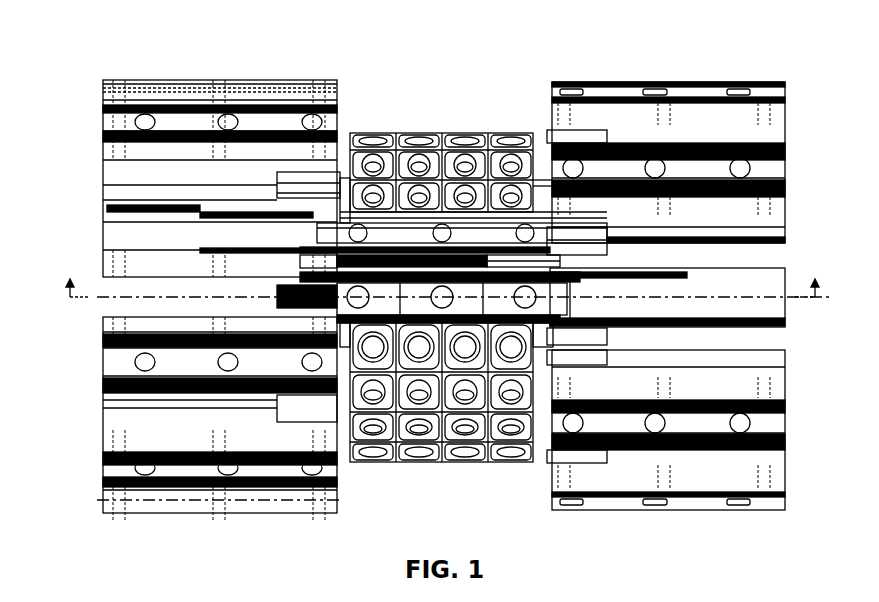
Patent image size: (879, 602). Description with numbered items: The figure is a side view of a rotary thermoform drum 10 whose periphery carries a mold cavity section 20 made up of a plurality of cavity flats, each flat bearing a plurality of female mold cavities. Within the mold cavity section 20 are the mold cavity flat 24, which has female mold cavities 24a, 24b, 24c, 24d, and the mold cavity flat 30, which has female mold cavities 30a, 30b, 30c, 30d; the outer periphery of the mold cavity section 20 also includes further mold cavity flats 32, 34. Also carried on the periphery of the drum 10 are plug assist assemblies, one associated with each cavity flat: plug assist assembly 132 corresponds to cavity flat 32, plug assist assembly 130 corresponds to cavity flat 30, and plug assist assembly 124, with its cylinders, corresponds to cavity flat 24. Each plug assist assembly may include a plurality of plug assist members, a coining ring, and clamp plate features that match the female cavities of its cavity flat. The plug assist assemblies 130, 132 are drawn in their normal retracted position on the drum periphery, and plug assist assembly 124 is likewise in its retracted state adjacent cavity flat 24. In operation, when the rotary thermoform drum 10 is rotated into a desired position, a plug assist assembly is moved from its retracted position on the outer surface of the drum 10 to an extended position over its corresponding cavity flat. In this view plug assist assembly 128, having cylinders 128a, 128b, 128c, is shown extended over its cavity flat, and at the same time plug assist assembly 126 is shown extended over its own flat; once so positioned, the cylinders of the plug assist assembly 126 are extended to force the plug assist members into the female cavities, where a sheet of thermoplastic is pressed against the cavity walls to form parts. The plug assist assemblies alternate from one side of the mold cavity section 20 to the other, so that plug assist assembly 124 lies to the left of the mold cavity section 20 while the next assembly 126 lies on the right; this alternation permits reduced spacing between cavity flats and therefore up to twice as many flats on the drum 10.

The rotary thermoform drum 10 is at (760, 45).
The mold cavity section 20 is at (506, 71).
The mold cavity flat 24 is at (535, 353).
The female mold cavity 24a is at (377, 360).
The female mold cavity 24b is at (420, 360).
The female mold cavity 24c is at (465, 360).
The female mold cavity 24d is at (508, 360).
The mold cavity flat 30 is at (560, 192).
The female mold cavity 30a is at (377, 200).
The female mold cavity 30b is at (418, 200).
The female mold cavity 30c is at (465, 203).
The female mold cavity 30d is at (507, 203).
The mold cavity flat 32 is at (578, 148).
The mold cavity flat 34 is at (550, 133).
The plug assist assembly 124 is at (107, 359).
The plug assist assembly 126 is at (560, 289).
The plug assist assembly 128 is at (318, 235).
The cylinder 128a is at (355, 226).
The cylinder 128b is at (442, 222).
The cylinder 128c is at (550, 224).
The plug assist assembly 130 is at (775, 178).
The plug assist assembly 132 is at (107, 121).